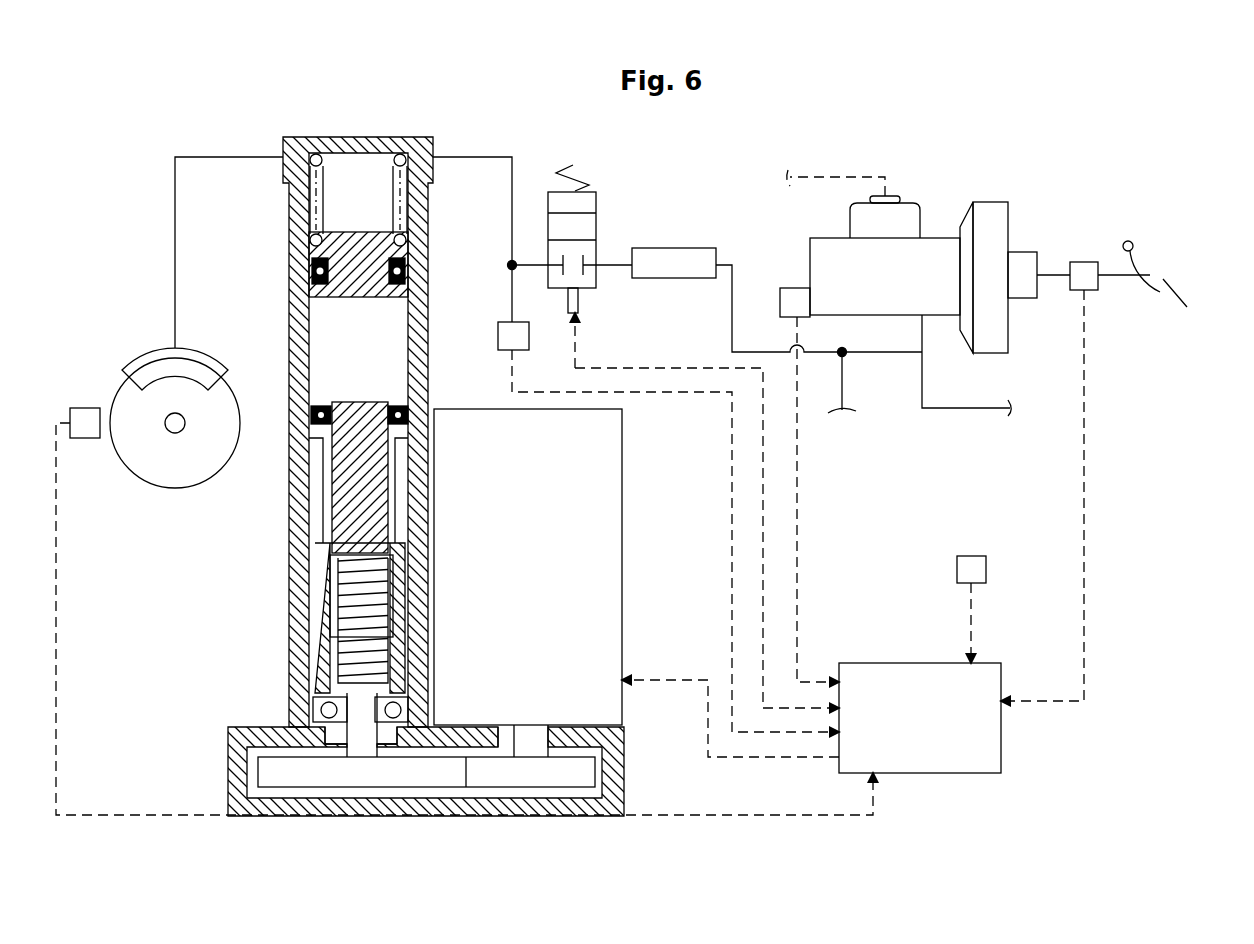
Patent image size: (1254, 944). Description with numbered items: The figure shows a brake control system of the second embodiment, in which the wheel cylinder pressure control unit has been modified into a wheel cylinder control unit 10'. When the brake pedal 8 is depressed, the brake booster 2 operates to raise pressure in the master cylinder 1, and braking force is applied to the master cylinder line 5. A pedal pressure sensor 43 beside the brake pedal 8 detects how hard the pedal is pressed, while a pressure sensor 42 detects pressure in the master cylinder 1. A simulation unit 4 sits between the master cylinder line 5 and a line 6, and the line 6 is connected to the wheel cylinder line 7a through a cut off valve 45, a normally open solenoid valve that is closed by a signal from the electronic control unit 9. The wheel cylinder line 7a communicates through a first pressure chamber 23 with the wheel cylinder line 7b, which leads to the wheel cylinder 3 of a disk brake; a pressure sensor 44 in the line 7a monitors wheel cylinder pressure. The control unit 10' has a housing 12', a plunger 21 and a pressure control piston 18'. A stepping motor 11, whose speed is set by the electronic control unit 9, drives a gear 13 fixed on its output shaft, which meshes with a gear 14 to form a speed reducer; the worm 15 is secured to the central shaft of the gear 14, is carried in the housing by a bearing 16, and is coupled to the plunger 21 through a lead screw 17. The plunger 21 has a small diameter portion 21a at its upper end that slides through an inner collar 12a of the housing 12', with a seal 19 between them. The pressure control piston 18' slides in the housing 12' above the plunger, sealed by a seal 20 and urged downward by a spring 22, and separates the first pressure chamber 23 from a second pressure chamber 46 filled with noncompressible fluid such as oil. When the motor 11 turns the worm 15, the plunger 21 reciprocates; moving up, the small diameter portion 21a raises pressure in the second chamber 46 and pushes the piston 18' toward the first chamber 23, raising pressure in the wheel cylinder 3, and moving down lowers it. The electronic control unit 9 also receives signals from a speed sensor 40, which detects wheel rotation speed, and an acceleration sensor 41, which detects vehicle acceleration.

The master cylinder 1 is at (932, 245).
The brake booster 2 is at (988, 202).
The wheel cylinder 3 is at (148, 352).
The simulation unit 4 is at (687, 278).
The master cylinder line 5 is at (848, 350).
The line 6 is at (617, 263).
The wheel cylinder line 7a is at (517, 178).
The wheel cylinder line 7b is at (213, 157).
The brake pedal 8 is at (1175, 277).
The electronic control unit 9 is at (1002, 684).
The wheel cylinder control unit 10' is at (407, 476).
The motor 11 is at (623, 576).
The housing 12' is at (391, 432).
The inner collar 12a is at (323, 437).
The gear 13 is at (595, 775).
The gear 14 is at (260, 777).
The worm 15 is at (353, 738).
The bearing 16 is at (323, 703).
The lead screw 17 is at (327, 655).
The pressure control piston 18' is at (311, 239).
The seal 19 is at (323, 420).
The seal 20 is at (313, 273).
The plunger 21 is at (350, 523).
The small diameter portion 21a is at (350, 400).
The spring 22 is at (393, 250).
The first pressure chamber 23 is at (375, 206).
The speed sensor 40 is at (88, 438).
The acceleration sensor 41 is at (986, 571).
The pressure sensor 42 is at (795, 288).
The pedal pressure sensor 43 is at (1085, 260).
The pressure sensor 44 is at (494, 335).
The cut off valve 45 is at (598, 282).
The second pressure chamber 46 is at (377, 351).